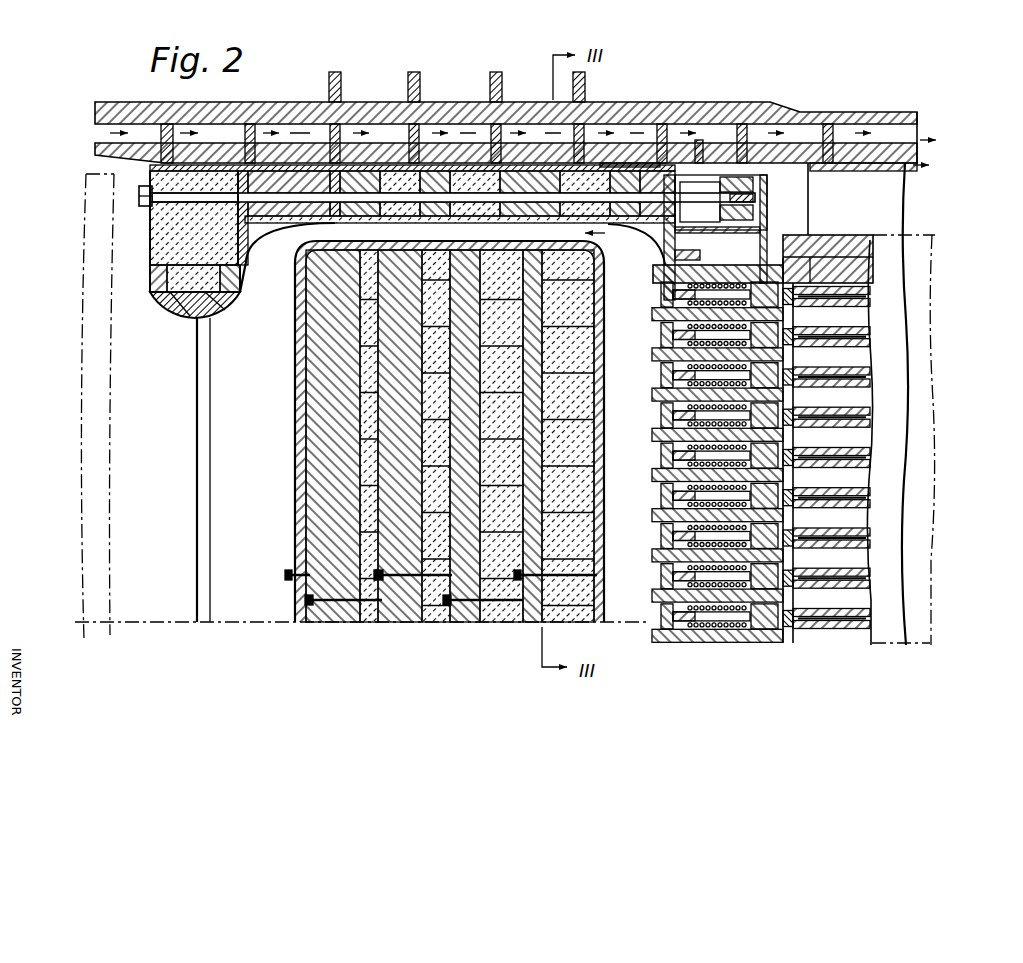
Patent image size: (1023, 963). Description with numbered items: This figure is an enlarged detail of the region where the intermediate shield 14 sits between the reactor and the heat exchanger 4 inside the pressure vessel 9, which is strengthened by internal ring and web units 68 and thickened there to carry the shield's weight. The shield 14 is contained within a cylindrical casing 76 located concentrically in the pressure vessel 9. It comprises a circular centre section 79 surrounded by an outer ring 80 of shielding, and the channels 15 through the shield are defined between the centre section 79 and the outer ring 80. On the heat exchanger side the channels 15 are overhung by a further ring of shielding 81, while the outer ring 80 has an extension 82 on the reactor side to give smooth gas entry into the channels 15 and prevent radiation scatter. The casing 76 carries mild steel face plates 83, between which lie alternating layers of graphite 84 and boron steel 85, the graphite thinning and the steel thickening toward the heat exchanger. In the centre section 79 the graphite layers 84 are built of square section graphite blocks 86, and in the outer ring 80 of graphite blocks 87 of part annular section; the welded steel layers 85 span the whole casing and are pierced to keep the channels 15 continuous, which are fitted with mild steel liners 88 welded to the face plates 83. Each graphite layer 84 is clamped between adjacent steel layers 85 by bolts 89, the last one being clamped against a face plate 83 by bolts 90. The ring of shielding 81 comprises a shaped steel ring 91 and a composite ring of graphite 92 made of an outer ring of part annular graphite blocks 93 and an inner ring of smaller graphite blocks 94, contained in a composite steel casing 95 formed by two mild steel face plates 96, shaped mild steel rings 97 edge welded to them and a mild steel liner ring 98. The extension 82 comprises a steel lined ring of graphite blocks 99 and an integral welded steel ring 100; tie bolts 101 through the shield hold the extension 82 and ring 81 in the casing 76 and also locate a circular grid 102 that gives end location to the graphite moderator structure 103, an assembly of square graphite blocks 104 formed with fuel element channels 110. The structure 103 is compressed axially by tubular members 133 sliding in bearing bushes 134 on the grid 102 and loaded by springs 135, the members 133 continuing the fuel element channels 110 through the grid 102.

The heat exchanger 4 is at (88, 470).
The pressure vessel 9 is at (240, 112).
The intermediate shield 14 is at (445, 456).
The channels 15 is at (378, 228).
The ring and web units 68 is at (618, 163).
The cylindrical casing 76 is at (370, 180).
The circular centre section 79 is at (330, 492).
The outer ring of shielding 80 is at (437, 183).
The ring of shielding 81 is at (178, 320).
The extension 82 is at (657, 222).
The mild steel face plates 83 is at (297, 392).
The layers of graphite 84 is at (557, 627).
The layers of steel 85 is at (533, 617).
The square section graphite blocks 86 is at (570, 570).
The graphite blocks of part annular cross-section 87 is at (528, 193).
The mild steel liners 88 is at (468, 232).
The bolts 89 is at (463, 607).
The bolts 90 is at (297, 573).
The shaped steel ring 91 is at (290, 185).
The composite ring of graphite 92 is at (162, 230).
The outer ring of part annular graphite blocks 93 is at (160, 252).
The inner ring of smaller graphite blocks 94 is at (220, 303).
The composite steel casing 95 is at (196, 322).
The mild steel face plates 96 is at (158, 275).
The shaped mild steel rings 97 is at (158, 290).
The mild steel liner ring 98 is at (167, 303).
The steel lined ring of graphite blocks 99 is at (640, 225).
The integral welded steel ring 100 is at (660, 183).
The tie bolts 101 is at (767, 205).
The circular grid 102 is at (667, 500).
The graphite moderator structure 103 is at (848, 275).
The graphite blocks 104 is at (857, 345).
The fuel element channels 110 is at (852, 317).
The members 133 is at (662, 356).
The bearing bushes 134 is at (662, 400).
The springs 135 is at (662, 444).